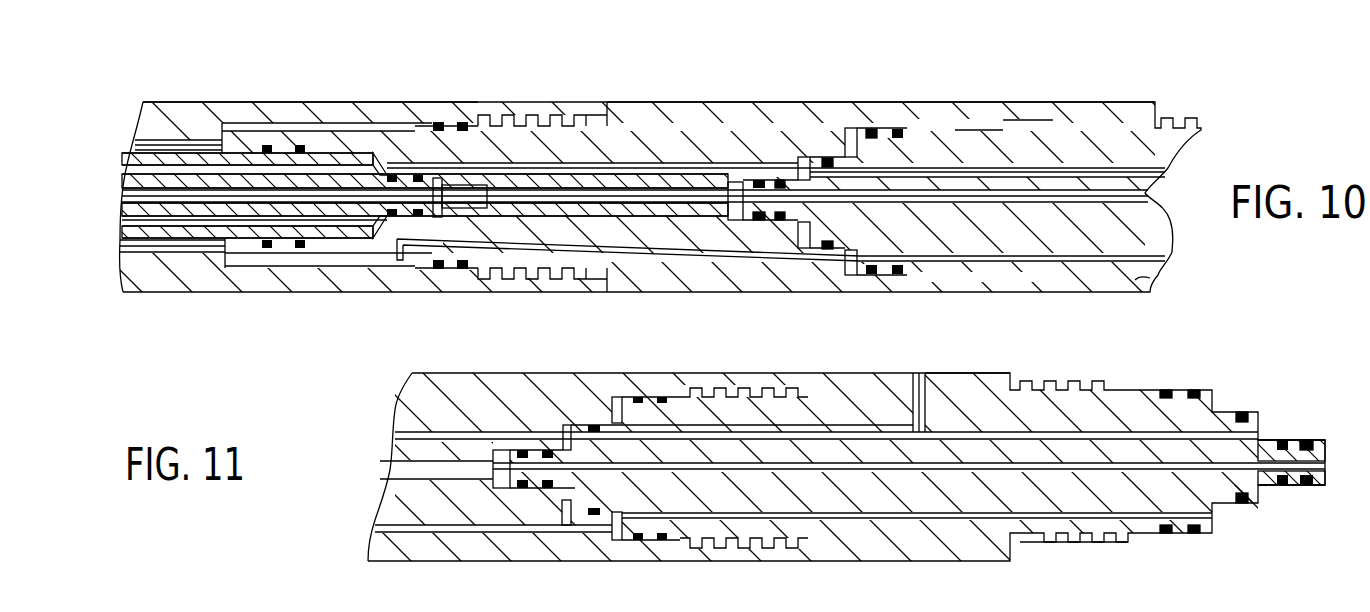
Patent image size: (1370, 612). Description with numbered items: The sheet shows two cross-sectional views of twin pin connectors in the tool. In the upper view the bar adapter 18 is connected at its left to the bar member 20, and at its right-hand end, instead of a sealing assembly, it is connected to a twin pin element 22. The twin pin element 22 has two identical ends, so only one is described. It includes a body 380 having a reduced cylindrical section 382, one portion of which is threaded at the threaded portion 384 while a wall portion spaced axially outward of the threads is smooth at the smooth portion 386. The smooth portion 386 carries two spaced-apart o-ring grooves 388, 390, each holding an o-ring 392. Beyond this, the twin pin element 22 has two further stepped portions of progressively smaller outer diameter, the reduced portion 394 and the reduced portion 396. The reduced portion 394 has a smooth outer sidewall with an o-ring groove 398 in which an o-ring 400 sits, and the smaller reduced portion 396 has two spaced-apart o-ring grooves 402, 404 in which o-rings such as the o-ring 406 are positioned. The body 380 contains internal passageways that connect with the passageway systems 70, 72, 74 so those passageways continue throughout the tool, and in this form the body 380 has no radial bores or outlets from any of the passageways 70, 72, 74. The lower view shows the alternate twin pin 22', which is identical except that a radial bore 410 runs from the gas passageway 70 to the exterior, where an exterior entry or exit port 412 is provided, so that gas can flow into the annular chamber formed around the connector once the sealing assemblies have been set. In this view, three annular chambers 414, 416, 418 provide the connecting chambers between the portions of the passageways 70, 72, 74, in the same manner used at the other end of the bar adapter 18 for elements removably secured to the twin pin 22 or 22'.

In FIG. 10, the bar adapter 18 is at (717, 102).
In FIG. 10, the bar member 20 is at (257, 102).
In FIG. 10, the twin pin element 22 is at (1018, 69).
In FIG. 11, the twin pin 22' is at (992, 345).
In FIG. 10, the passageway 70 is at (560, 160).
In FIG. 11, the passageway 70 is at (1260, 440).
In FIG. 10, the passageway 72 is at (545, 202).
In FIG. 10, the passageway 74 is at (632, 252).
In FIG. 10, the body 380 is at (1140, 282).
In FIG. 10, the reduced cylindrical section 382 is at (978, 128).
In FIG. 10, the threaded portion 384 is at (1020, 120).
In FIG. 11, the threaded portion 384 is at (1078, 542).
In FIG. 10, the smooth portion 386 is at (881, 128).
In FIG. 11, the smooth portion 386 is at (1154, 534).
In FIG. 11, the o-ring groove 388 is at (1167, 390).
In FIG. 11, the o-ring groove 390 is at (1197, 390).
In FIG. 10, the o-ring 392 is at (858, 276).
In FIG. 11, the o-ring 392 is at (1193, 534).
In FIG. 10, the reduced portion 394 is at (851, 128).
In FIG. 11, the reduced portion 394 is at (1246, 412).
In FIG. 10, the reduced portion 396 is at (838, 156).
In FIG. 11, the reduced portion 396 is at (1313, 441).
In FIG. 10, the o-ring groove 398 is at (829, 252).
In FIG. 11, the o-ring groove 398 is at (1241, 496).
In FIG. 10, the o-ring 400 is at (831, 246).
In FIG. 10, the o-ring groove 402 is at (762, 224).
In FIG. 10, the o-ring groove 404 is at (785, 221).
In FIG. 10, the o-ring 406 is at (754, 222).
In FIG. 11, the radial bore 410 is at (913, 410).
In FIG. 11, the exterior entry or exit port 412 is at (920, 373).
In FIG. 11, the annular chamber 414 is at (501, 488).
In FIG. 11, the annular chamber 416 is at (566, 526).
In FIG. 11, the annular chamber 418 is at (618, 541).